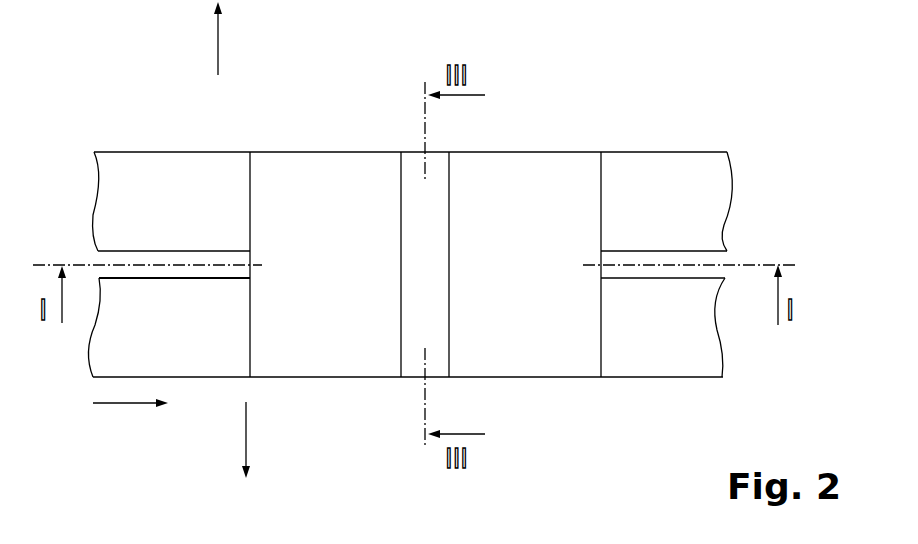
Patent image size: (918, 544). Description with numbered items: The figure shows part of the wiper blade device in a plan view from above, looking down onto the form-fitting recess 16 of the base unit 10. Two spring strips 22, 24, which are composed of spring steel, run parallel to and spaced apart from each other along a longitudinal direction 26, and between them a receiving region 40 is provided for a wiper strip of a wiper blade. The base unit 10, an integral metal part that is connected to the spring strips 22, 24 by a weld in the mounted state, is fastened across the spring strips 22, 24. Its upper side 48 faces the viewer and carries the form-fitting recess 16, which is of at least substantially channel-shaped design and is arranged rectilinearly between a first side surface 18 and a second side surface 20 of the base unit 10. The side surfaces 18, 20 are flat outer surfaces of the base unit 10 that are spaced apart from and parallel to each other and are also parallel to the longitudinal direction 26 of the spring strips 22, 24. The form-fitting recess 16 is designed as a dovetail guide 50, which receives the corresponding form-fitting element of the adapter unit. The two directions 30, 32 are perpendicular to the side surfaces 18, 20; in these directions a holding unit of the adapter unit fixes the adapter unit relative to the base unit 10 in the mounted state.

The base unit 10 is at (410, 260).
The form-fitting recess 16 is at (395, 221).
The dovetail guide 50 is at (407, 163).
The first side surface 18 is at (517, 381).
The second side surface 20 is at (498, 150).
The spring strip 22 is at (657, 167).
The spring strip 24 is at (677, 357).
The longitudinal direction 26 is at (125, 404).
The direction 30 is at (248, 437).
The direction 32 is at (213, 43).
The receiving region 40 is at (185, 288).
The upper side 48 is at (283, 182).